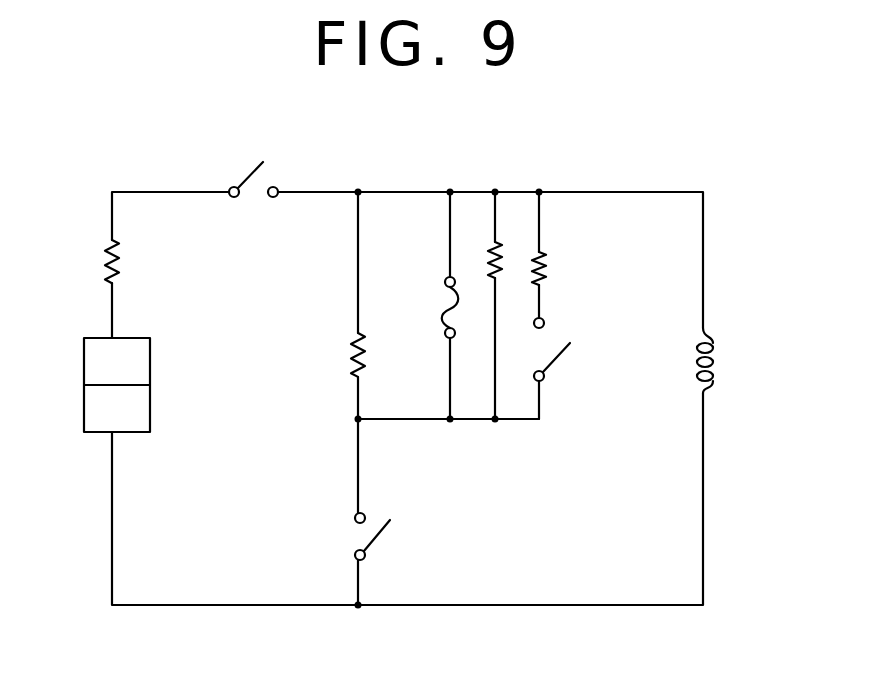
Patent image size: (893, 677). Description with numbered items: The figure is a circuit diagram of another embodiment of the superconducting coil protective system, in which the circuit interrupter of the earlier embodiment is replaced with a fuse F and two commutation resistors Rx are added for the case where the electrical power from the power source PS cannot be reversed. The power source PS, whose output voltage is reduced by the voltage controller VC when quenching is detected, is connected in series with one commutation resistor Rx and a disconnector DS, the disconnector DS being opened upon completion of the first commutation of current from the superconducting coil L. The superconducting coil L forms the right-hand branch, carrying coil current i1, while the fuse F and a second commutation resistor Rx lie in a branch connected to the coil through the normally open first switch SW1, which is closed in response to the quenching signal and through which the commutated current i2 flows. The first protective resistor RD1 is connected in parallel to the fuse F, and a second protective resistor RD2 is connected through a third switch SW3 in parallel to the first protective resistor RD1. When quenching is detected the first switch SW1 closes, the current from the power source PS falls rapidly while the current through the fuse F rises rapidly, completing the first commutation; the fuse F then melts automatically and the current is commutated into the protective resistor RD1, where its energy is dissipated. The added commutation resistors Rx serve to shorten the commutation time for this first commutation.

The disconnector DS is at (253, 161).
The commutation resistor Rx is at (235, 308).
The power source PS is at (117, 361).
The voltage controller VC is at (117, 408).
The fuse F is at (438, 307).
The first protective resistor RD1 is at (497, 258).
The second protective resistor RD2 is at (565, 290).
The third switch SW3 is at (577, 362).
The superconducting coil L is at (715, 360).
The first switch SW1 is at (399, 536).
The current i1 is at (698, 160).
The current i2 is at (373, 565).